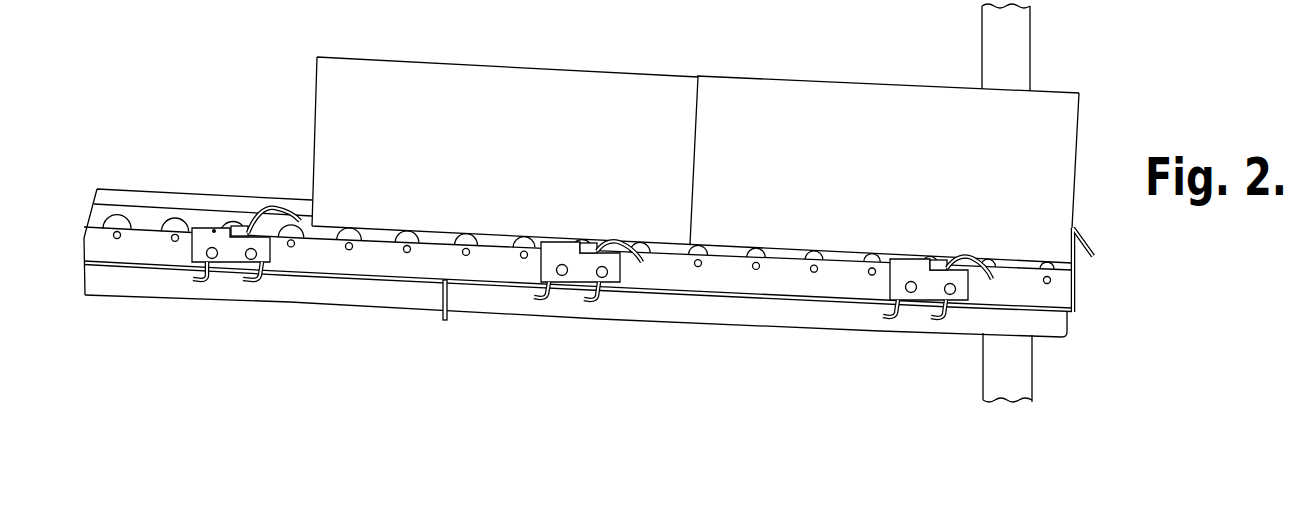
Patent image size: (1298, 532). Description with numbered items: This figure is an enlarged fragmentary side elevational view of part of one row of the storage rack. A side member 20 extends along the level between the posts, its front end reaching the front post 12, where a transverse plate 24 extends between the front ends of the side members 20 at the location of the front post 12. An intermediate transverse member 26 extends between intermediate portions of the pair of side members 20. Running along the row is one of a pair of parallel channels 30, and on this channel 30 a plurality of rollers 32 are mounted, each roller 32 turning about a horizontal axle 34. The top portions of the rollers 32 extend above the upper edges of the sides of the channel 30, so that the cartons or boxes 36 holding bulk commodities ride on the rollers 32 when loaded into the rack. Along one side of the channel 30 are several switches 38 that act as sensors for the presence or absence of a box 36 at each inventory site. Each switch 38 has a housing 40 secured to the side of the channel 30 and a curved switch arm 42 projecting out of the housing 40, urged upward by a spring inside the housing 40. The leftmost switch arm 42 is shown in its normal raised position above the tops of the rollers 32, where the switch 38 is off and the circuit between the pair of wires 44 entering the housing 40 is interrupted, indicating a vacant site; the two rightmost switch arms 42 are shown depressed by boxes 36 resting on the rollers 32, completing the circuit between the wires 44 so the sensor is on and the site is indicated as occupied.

The front post 12 is at (1017, 32).
The side member 20 is at (667, 313).
The transverse plate 24 is at (1076, 288).
The intermediate transverse member 26 is at (450, 300).
The channel 30 is at (492, 258).
The roller 32 is at (460, 235).
The horizontal axle 34 is at (113, 233).
The carton or box 36 is at (637, 78).
The switch 38 is at (275, 284).
The housing 40 is at (202, 228).
The switch arm 42 is at (272, 208).
The wire 44 is at (597, 298).